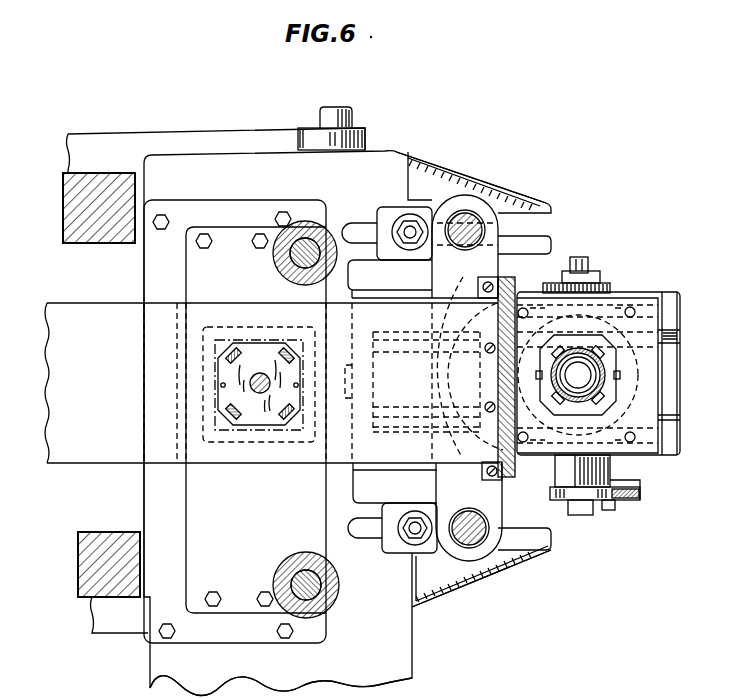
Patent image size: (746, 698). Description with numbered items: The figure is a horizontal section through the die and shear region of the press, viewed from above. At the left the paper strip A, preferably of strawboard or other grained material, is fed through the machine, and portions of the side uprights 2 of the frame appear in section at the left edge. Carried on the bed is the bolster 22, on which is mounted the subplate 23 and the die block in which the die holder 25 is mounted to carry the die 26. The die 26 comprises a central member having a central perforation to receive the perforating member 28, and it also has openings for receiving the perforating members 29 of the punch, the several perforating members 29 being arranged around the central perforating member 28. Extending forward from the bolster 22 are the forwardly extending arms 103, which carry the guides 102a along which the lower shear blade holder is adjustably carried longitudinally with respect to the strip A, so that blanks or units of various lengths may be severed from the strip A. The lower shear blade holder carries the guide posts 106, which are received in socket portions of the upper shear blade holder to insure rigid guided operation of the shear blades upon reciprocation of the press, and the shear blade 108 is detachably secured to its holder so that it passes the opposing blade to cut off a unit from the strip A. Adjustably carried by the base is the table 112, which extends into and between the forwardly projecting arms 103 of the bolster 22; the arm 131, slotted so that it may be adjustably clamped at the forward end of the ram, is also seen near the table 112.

The side uprights 2 is at (78, 243).
The paper strip A is at (48, 389).
The bolster 22 is at (352, 667).
The subplate 23 is at (232, 636).
The die holder 25 is at (235, 421).
The die 26 is at (257, 427).
The perforating member 28 is at (260, 376).
The perforating members 29 is at (232, 352).
The guides 102a is at (536, 219).
The forwardly extending arms 103 is at (455, 183).
The guide posts 106 is at (468, 218).
The shear blade 108 is at (511, 283).
The table 112 is at (647, 458).
The arm 131 is at (633, 497).